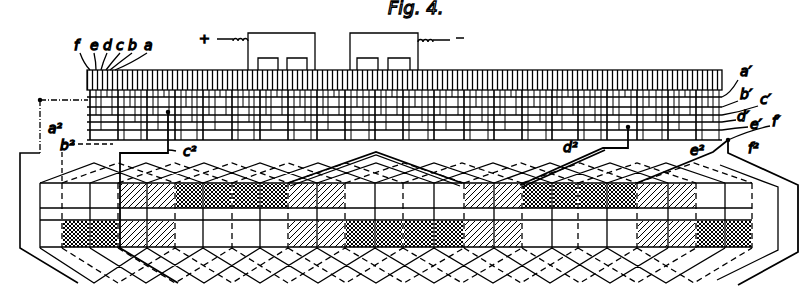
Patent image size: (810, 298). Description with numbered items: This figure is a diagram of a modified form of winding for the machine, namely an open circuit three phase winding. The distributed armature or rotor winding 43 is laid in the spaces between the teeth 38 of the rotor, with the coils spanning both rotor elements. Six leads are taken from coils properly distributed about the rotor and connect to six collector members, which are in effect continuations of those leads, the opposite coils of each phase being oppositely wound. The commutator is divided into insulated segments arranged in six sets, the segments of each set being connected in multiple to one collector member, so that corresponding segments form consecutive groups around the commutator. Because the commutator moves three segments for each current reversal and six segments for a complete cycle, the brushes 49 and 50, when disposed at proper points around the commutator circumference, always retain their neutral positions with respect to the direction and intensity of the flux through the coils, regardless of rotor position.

The teeth 38 is at (409, 203).
The armature or rotor winding 43 is at (72, 278).
The brush 49 is at (294, 31).
The brush 50 is at (371, 32).